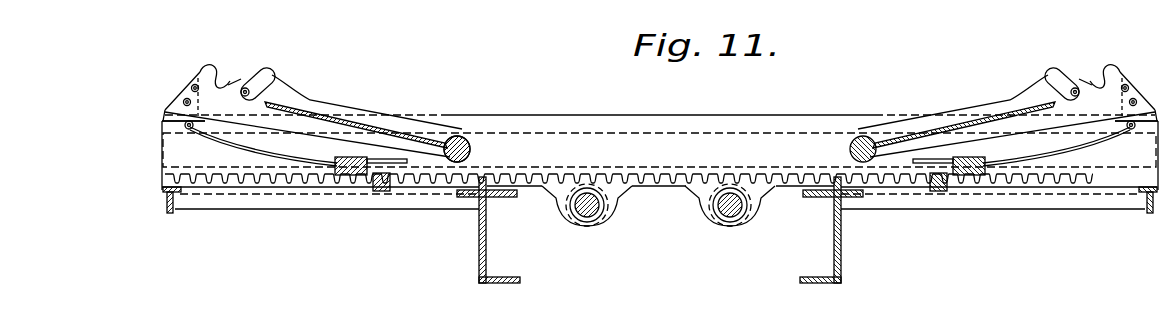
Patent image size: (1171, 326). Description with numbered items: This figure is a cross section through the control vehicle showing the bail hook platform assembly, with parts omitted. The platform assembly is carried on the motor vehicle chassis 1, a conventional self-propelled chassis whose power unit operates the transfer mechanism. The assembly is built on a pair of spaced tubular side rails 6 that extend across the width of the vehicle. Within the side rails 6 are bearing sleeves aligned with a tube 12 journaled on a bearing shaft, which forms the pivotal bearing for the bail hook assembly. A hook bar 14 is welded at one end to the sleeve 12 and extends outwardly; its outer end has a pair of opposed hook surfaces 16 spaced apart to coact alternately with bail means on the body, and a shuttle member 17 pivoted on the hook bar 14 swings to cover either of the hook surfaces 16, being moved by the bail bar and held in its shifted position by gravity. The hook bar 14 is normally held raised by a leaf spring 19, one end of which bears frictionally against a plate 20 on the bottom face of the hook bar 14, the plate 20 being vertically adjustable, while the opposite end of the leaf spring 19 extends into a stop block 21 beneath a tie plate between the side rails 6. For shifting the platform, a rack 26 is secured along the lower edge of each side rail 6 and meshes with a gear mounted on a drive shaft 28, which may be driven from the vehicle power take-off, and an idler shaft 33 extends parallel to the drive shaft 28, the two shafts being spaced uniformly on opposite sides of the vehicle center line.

The motor vehicle chassis 1 is at (464, 275).
The side rail 6 is at (757, 145).
The tube 12 is at (459, 137).
The hook bar 14 is at (303, 98).
The hook surfaces 16 is at (218, 84).
The shuttle member 17 is at (1060, 73).
The leaf spring 19 is at (203, 139).
The plate 20 is at (164, 117).
The stop block 21 is at (360, 180).
The rack 26 is at (293, 178).
The drive shaft 28 is at (590, 206).
The idler shaft 33 is at (730, 212).